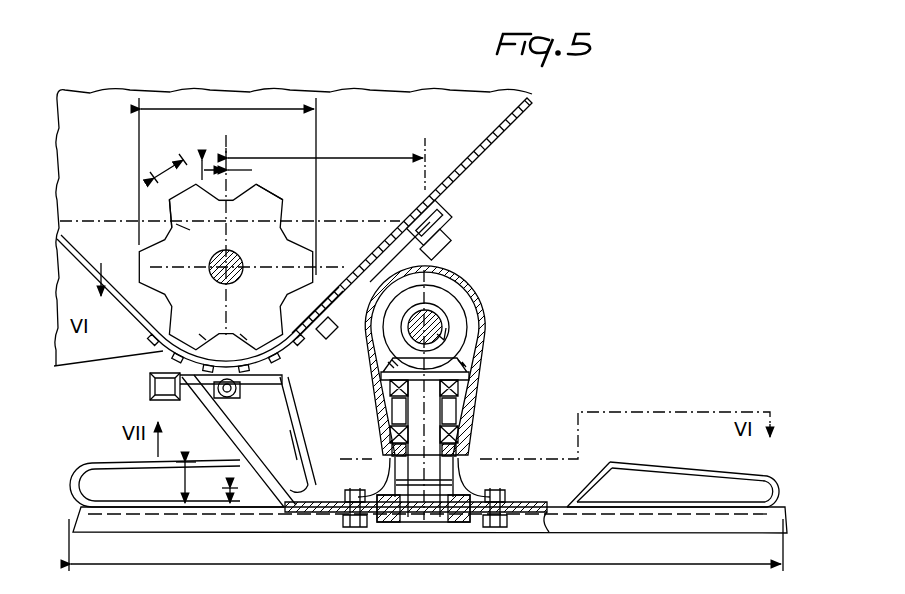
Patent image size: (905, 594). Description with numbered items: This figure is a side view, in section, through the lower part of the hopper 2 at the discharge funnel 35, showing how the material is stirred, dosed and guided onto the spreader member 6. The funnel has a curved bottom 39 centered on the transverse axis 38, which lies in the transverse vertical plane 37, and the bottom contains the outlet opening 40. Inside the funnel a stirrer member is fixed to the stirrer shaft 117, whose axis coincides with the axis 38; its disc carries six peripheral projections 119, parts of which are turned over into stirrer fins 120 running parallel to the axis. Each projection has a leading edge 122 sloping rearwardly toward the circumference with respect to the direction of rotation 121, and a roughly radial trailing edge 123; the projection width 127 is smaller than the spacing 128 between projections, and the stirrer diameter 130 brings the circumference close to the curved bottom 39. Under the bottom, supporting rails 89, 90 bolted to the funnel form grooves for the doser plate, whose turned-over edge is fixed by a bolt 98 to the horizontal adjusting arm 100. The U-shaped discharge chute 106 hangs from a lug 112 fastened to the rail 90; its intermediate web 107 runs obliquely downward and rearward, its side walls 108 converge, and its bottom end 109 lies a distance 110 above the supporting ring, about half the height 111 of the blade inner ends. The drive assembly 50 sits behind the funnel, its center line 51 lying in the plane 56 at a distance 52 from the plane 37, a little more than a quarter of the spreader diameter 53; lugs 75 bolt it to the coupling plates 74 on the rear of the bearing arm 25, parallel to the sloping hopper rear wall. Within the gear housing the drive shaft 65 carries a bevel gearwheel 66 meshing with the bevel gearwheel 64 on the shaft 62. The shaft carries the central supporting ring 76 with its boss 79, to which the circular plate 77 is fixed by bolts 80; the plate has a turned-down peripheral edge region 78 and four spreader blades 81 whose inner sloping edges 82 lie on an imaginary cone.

The hopper 2 is at (532, 106).
The spreader member 6 is at (96, 461).
The bearing arm 25 is at (75, 372).
The discharge funnel 35 is at (378, 117).
The transverse vertical plane 37 is at (231, 148).
The transverse axis 38 is at (231, 282).
The curved bottom 39 is at (221, 333).
The outlet opening 40 is at (236, 342).
The drive assembly 50 is at (482, 292).
The center line 51 is at (432, 328).
The distance 52 is at (368, 158).
The diameter 53 is at (574, 562).
The transverse plane 56 is at (425, 178).
The shaft 62 is at (440, 410).
The bevel gearwheel 64 is at (468, 366).
The drive shaft 65 is at (442, 332).
The bevel gearwheel 66 is at (468, 347).
The coupling plate 74 is at (446, 220).
The lug 75 is at (440, 258).
The central supporting ring 76 is at (468, 466).
The circular plate 77 is at (522, 506).
The peripheral edge region 78 is at (435, 519).
The circular boss 79 is at (392, 523).
The bolts 80 is at (355, 490).
The spreader blade 81 is at (692, 462).
The edge 82 is at (594, 470).
The supporting rail 89 is at (157, 342).
The supporting rail 90 is at (328, 339).
The bolt 98 is at (234, 395).
The adjusting arm 100 is at (150, 384).
The discharge chute 106 is at (292, 424).
The intermediate web 107 is at (228, 426).
The side wall 108 is at (296, 440).
The bottom end 109 is at (317, 466).
The distance 110 is at (228, 489).
The height 111 is at (180, 487).
The lug 112 is at (282, 374).
The stirrer shaft 117 is at (215, 278).
The projection 119 is at (190, 222).
The stirrer fin 120 is at (283, 199).
The direction of rotation 121 is at (282, 264).
The leading edge 122 is at (239, 189).
The trailing edge 123 is at (169, 203).
The width 127 is at (164, 161).
The distance 128 is at (208, 162).
The diameter 130 is at (227, 181).